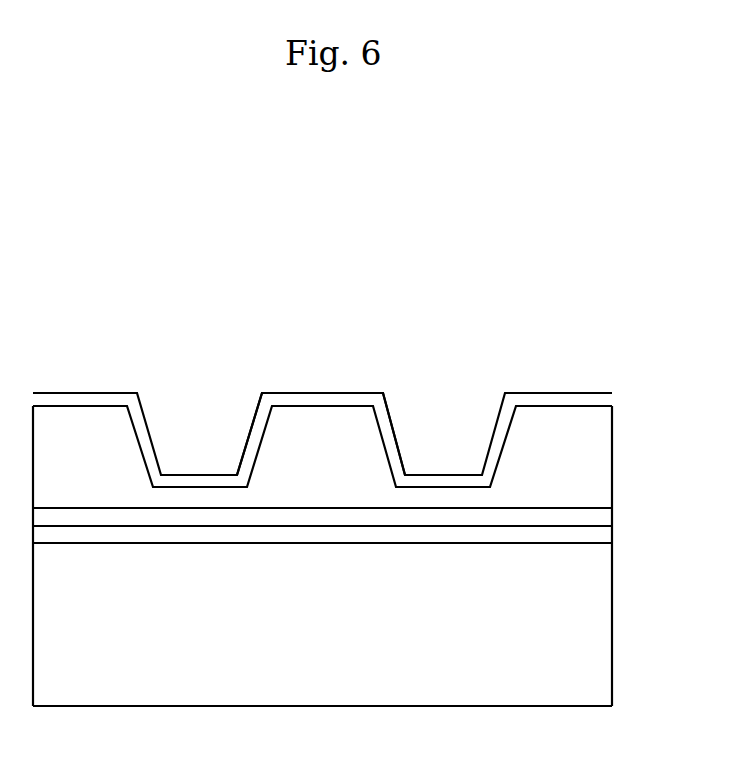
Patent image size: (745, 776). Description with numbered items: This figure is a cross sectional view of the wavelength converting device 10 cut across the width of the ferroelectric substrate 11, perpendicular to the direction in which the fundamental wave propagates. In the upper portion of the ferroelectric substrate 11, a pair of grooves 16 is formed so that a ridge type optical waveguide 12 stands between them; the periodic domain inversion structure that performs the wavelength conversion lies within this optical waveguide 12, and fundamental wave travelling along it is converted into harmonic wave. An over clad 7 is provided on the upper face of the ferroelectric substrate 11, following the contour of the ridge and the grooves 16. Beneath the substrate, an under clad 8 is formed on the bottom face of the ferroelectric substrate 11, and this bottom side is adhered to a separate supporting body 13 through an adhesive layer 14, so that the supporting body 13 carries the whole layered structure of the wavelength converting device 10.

The wavelength converting device 10 is at (638, 404).
The over clad 7 is at (134, 393).
The ridge type optical waveguide 12 is at (389, 394).
The grooves 16 is at (197, 475).
The ferroelectric substrate 11 is at (600, 445).
The under clad 8 is at (600, 518).
The adhesive layer 14 is at (600, 533).
The supporting body 13 is at (583, 623).